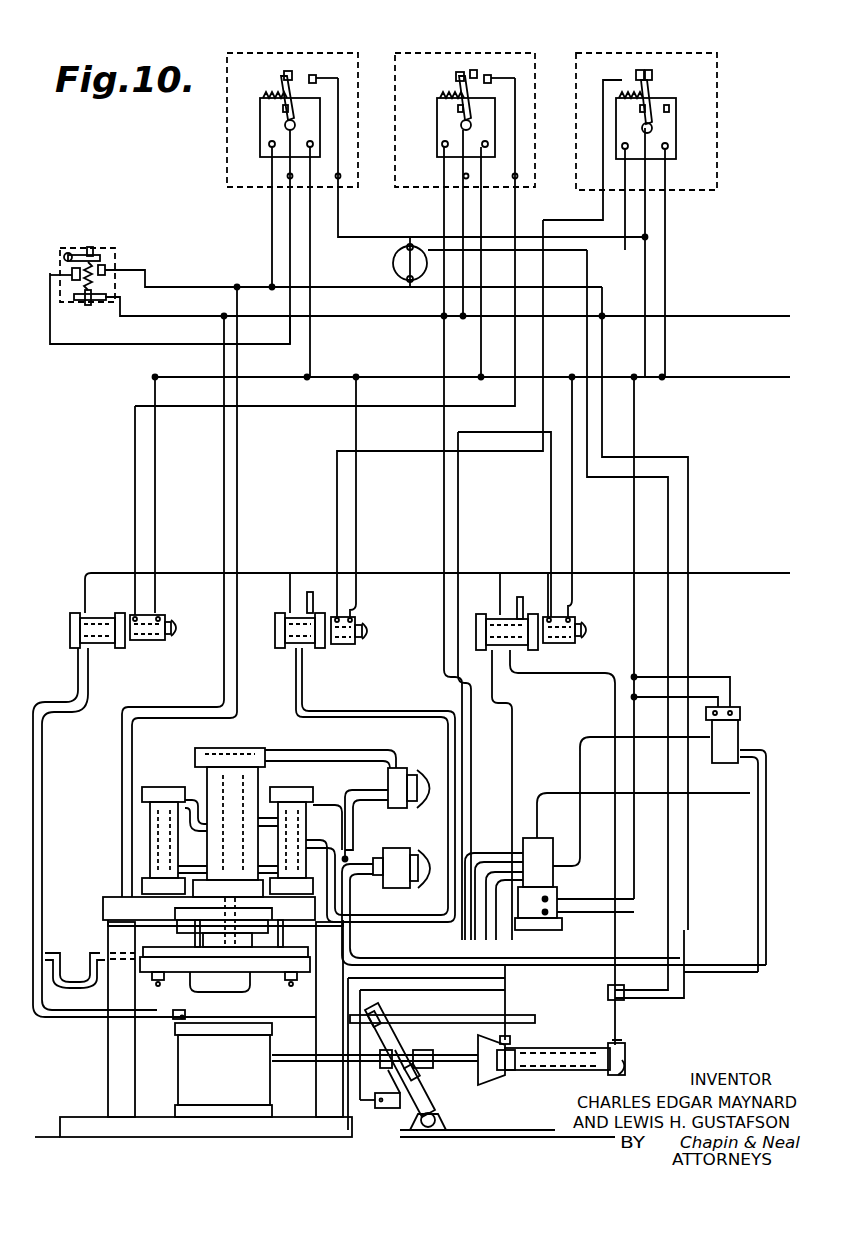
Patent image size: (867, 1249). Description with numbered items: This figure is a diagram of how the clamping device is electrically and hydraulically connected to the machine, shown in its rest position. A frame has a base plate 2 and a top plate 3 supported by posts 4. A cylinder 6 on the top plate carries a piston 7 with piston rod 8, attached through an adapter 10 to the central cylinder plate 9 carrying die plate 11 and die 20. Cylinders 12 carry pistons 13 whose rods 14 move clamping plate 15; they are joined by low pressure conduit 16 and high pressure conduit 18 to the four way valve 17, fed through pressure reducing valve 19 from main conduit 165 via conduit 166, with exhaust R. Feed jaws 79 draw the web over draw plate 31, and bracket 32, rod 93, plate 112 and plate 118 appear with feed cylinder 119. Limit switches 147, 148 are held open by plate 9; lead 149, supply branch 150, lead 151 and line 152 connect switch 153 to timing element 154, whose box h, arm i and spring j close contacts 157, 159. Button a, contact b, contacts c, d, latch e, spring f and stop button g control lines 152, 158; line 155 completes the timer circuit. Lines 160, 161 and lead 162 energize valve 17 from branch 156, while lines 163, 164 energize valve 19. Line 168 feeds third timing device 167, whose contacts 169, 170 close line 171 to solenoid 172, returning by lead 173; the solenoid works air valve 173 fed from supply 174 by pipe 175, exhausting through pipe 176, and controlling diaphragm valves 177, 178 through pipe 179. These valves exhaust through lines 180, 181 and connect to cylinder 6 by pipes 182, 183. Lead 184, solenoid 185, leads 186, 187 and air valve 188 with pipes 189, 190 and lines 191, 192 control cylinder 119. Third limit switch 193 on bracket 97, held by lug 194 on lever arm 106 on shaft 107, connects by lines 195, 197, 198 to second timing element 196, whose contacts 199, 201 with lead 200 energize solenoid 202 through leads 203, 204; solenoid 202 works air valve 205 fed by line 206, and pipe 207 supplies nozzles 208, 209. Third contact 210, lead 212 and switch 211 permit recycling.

The base plate 2 is at (70, 1118).
The top plate 3 is at (103, 901).
The supporting posts 4 is at (108, 1075).
The cylinder 6 is at (266, 748).
The piston 7 is at (203, 750).
The piston rod 8 is at (220, 784).
The central cylinder plate 9 is at (116, 926).
The adapter 10 is at (220, 916).
The die plate 11 is at (310, 961).
The fluid operated cylinders 12 is at (150, 784).
The pistons 13 is at (312, 811).
The piston rods 14 is at (306, 830).
The clamping plate 15 is at (158, 960).
The low pressure conduit 16 is at (492, 848).
The solenoid operated four way valve 17 is at (546, 875).
The high pressure conduit 18 is at (468, 935).
The pressure reducing valve 19 is at (740, 722).
The die 20 is at (220, 981).
The draw plate 31 is at (232, 1030).
The support 32 is at (223, 1076).
The feed jaws 79 is at (196, 1006).
The rod 93 is at (523, 1019).
The bracket 97 is at (350, 1133).
The lever arm 106 is at (414, 1095).
The shaft 107 is at (428, 1127).
The rod 112 is at (458, 1054).
The plate 118 is at (522, 1056).
The feed cylinder 119 is at (580, 1062).
The limit switch 147 is at (172, 980).
The limit switch 148 is at (280, 976).
The lead 149 is at (222, 460).
The supply line branch 150 is at (233, 320).
The lead 151 is at (238, 476).
The line 152 is at (240, 286).
The switch 153 is at (62, 244).
The timing element 154 is at (234, 127).
The line 155 is at (315, 261).
The supply line branch 156 is at (727, 379).
The contact 157 is at (292, 70).
The line 158 is at (182, 343).
The contact 159 is at (316, 74).
The line 160 is at (339, 227).
The line 161 is at (640, 298).
The lead 162 is at (624, 537).
The line 163 is at (710, 674).
The line 164 is at (733, 686).
The main fluid pressure conduit 165 is at (727, 965).
The conduit 166 is at (590, 737).
The third timing device 167 is at (720, 96).
The line 168 is at (668, 280).
The contact 169 is at (650, 70).
The contact 170 is at (637, 70).
The line 171 is at (560, 180).
The solenoid 172 is at (383, 626).
The air valve 173 is at (261, 652).
The air pressure supply line 174 is at (745, 572).
The pipe line 175 is at (282, 598).
The pipe line 176 is at (318, 566).
The diaphragm valve 177 is at (430, 748).
The diaphragm valve 178 is at (428, 846).
The pipe line 179 is at (394, 713).
The exhaust line 180 is at (376, 786).
The exhaust line 181 is at (350, 844).
The pipe line 182 is at (330, 750).
The pipe 183 is at (390, 878).
The lead 184 is at (424, 551).
The solenoid 185 is at (593, 610).
The lead 186 is at (460, 505).
The lead 187 is at (570, 505).
The air valve 188 is at (457, 610).
The pipe line 189 is at (509, 570).
The pipe line 190 is at (520, 599).
The line 191 is at (512, 717).
The line 192 is at (592, 666).
The third limit switch 193 is at (392, 1110).
The lug 194 is at (414, 1078).
The line 195 is at (425, 1003).
The second timing element 196 is at (464, 54).
The line 197 is at (668, 936).
The line 198 is at (485, 210).
The contact 199 is at (476, 68).
The lead 200 is at (422, 262).
The contact 201 is at (486, 73).
The solenoid 202 is at (142, 642).
The lead 203 is at (135, 516).
The lead 204 is at (155, 513).
The air valve 205 is at (59, 646).
The line 206 is at (80, 597).
The pipe 207 is at (118, 752).
The air nozzle 208 is at (118, 1001).
The nozzle 209 is at (144, 950).
The third contact 210 is at (455, 70).
The switch 211 is at (392, 258).
The lead 212 is at (405, 234).
The exhaust line R is at (554, 788).
The start button a is at (85, 304).
The contact b is at (107, 295).
The contact c is at (105, 268).
The contact d is at (70, 268).
The latch e is at (70, 278).
The spring f is at (102, 264).
The stop button g is at (89, 244).
The box h is at (268, 132).
The contact arm i is at (305, 110).
The tension spring j is at (270, 92).